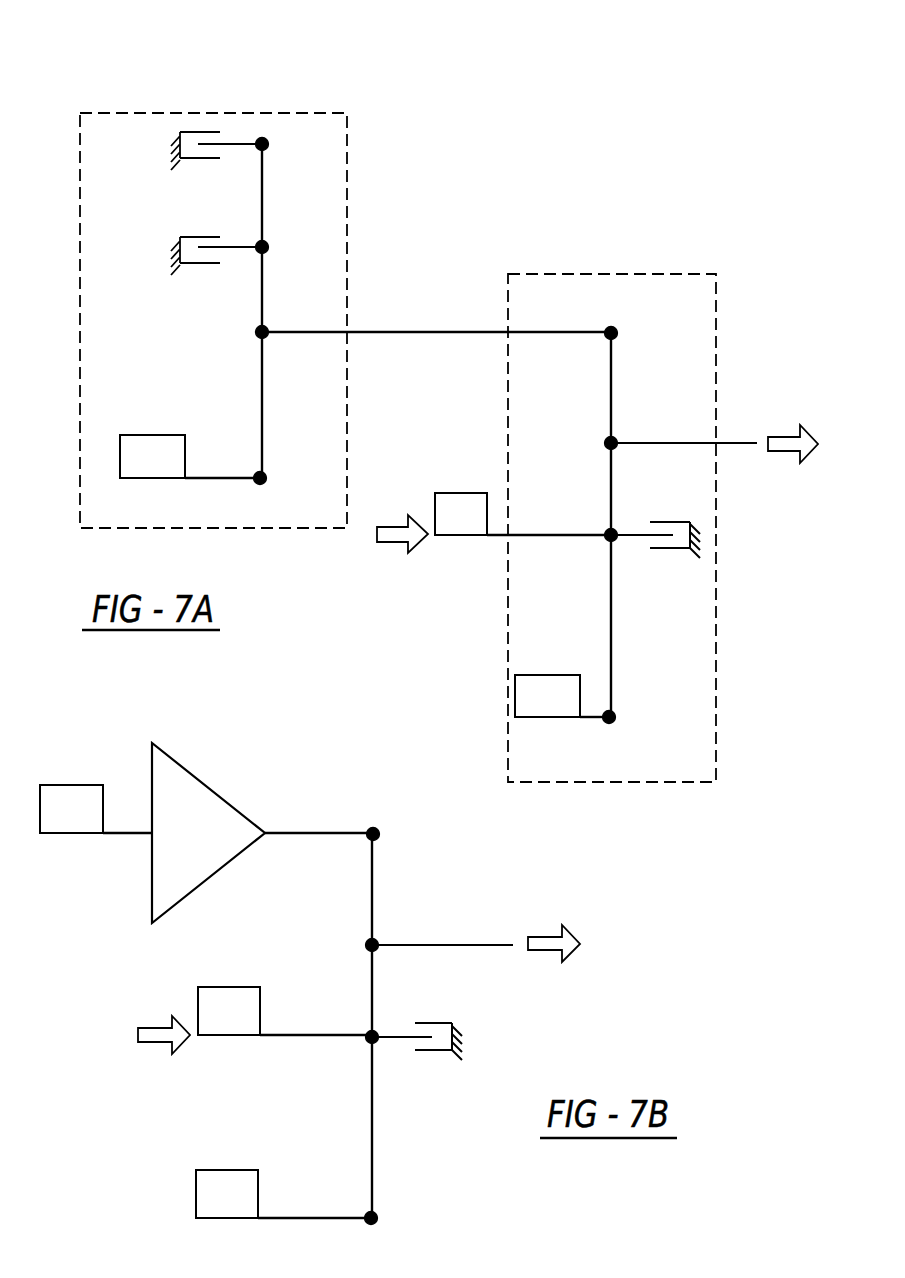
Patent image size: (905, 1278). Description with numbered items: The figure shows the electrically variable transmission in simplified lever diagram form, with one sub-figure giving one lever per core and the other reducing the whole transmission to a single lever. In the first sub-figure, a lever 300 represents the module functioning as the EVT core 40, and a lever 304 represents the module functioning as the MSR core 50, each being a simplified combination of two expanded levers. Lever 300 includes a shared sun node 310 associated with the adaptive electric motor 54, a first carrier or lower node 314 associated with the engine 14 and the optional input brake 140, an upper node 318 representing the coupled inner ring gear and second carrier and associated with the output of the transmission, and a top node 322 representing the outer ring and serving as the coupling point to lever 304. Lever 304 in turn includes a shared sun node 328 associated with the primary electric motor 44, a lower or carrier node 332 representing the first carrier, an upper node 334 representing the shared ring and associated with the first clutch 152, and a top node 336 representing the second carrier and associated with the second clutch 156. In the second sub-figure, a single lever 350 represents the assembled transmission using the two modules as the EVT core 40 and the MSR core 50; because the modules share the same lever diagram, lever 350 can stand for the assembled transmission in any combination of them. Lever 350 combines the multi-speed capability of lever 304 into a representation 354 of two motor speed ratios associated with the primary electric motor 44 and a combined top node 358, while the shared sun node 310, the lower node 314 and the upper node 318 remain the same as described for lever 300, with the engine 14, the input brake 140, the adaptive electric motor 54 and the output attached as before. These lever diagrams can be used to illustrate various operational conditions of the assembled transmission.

In FIG. 7A, the engine 14 is at (467, 493).
In FIG. 7B, the engine 14 is at (232, 987).
In FIG. 7A, the EVT core 40 is at (683, 274).
In FIG. 7B, the primary electric motor 44 is at (230, 1170).
In FIG. 7A, the MSR core 50 is at (320, 113).
In FIG. 7A, the adaptive electric motor 54 is at (160, 435).
In FIG. 7B, the adaptive electric motor 54 is at (78, 785).
In FIG. 7A, the input brake 140 is at (643, 538).
In FIG. 7B, the input brake 140 is at (400, 1035).
In FIG. 7A, the first clutch 152 is at (237, 250).
In FIG. 7A, the second clutch 156 is at (242, 142).
In FIG. 7A, the lever 300 is at (613, 400).
In FIG. 7A, the lever 304 is at (260, 405).
In FIG. 7A, the shared sun node 310 is at (607, 722).
In FIG. 7B, the shared sun node 310 is at (374, 1222).
In FIG. 7A, the first carrier or lower node 314 is at (613, 533).
In FIG. 7A, the upper node 318 is at (606, 444).
In FIG. 7B, the upper node 318 is at (375, 940).
In FIG. 7A, the top node 322 is at (611, 328).
In FIG. 7A, the shared sun node 328 is at (266, 472).
In FIG. 7A, the lower or carrier node 332 is at (267, 338).
In FIG. 7A, the upper node 334 is at (268, 249).
In FIG. 7A, the top node 336 is at (268, 148).
In FIG. 7B, the single lever 350 is at (374, 1133).
In FIG. 7B, the representation of two motor speed ratios 354 is at (190, 772).
In FIG. 7B, the combined top node 358 is at (378, 832).